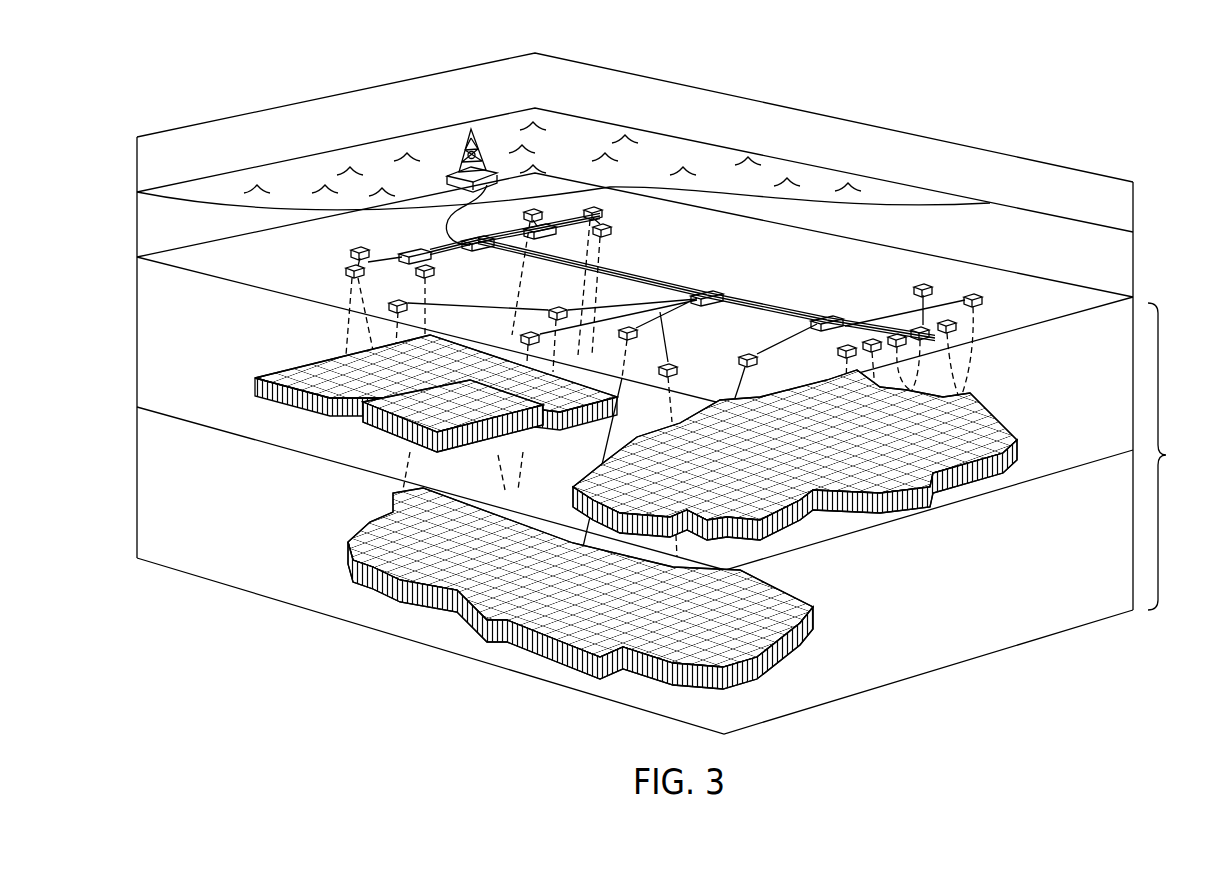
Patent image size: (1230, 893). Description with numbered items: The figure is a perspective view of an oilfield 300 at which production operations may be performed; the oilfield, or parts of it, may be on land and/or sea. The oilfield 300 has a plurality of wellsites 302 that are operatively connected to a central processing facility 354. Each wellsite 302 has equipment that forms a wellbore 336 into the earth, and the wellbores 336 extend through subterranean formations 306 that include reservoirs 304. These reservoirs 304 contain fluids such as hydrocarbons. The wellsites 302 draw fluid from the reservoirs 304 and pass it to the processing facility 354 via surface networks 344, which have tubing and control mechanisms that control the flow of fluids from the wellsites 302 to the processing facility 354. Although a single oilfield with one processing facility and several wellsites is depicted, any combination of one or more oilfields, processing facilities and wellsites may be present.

The oilfield 300 is at (193, 87).
The wellsites 302 is at (767, 337).
The reservoirs 304 is at (917, 508).
The subterranean formations 306 is at (1174, 456).
The wellbore 336 is at (984, 359).
The surface networks 344 is at (390, 270).
The central processing facility 354 is at (452, 143).